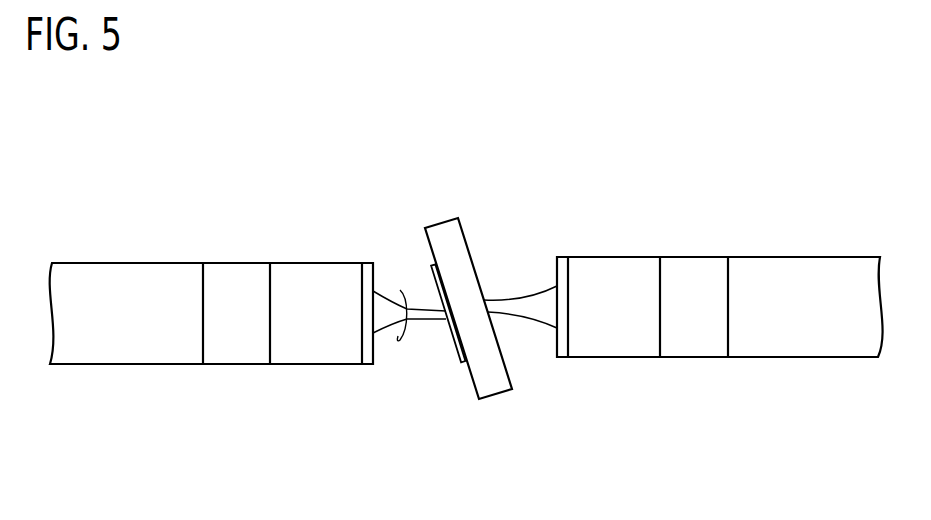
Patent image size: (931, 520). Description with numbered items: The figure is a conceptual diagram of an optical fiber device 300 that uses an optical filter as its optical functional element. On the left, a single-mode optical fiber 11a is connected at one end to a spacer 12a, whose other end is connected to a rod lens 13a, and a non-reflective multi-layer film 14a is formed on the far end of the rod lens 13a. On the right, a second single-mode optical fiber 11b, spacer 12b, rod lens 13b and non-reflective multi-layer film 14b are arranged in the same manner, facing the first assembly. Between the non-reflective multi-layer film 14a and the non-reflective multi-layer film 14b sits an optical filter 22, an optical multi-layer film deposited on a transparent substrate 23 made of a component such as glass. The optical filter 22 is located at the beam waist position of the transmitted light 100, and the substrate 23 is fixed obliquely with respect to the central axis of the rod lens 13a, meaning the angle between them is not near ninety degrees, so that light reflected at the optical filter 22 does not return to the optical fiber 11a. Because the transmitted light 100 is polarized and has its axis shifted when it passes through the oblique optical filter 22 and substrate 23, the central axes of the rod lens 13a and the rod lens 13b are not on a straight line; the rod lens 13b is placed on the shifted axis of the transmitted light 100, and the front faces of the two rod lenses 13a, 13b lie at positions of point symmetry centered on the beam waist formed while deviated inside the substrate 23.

The single-mode optical fiber 11a is at (128, 263).
The spacer 12a is at (240, 263).
The rod lens 13a is at (337, 263).
The non-reflective multi-layer film 14a is at (366, 274).
The single-mode optical fiber 11b is at (807, 255).
The spacer 12b is at (700, 255).
The rod lens 13b is at (612, 255).
The non-reflective multi-layer film 14b is at (565, 343).
The transmitted light 100 is at (398, 336).
The optical filter 22 is at (458, 363).
The substrate 23 is at (493, 398).
The optical fiber device 300 is at (541, 163).